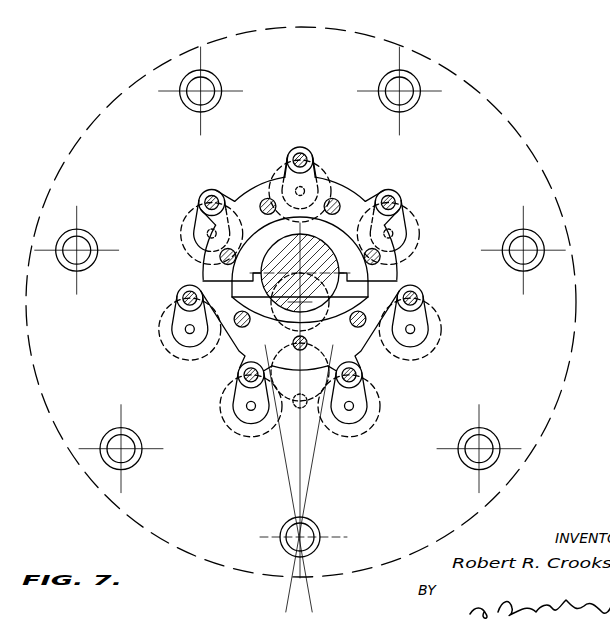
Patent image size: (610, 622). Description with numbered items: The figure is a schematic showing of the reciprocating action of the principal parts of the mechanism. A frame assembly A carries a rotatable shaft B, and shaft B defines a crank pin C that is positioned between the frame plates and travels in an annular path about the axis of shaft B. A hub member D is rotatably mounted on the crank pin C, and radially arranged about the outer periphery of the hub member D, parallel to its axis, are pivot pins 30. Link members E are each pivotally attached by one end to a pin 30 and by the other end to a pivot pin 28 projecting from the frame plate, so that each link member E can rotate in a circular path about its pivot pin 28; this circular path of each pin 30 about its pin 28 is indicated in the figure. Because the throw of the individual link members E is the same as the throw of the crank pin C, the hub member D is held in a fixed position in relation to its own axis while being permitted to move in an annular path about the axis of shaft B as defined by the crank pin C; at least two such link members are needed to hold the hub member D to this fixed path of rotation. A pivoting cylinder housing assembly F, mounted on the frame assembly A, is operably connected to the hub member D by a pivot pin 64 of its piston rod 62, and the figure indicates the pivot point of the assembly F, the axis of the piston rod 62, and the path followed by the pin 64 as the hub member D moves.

The frame assembly A is at (501, 112).
The rotatable shaft B is at (302, 304).
The crank pin C is at (278, 252).
The hub member D is at (345, 198).
The link member E is at (290, 148).
The cylinder housing assembly F is at (280, 537).
The pivot pin 28 is at (186, 328).
The pivot pin 30 is at (303, 158).
The piston rod 62 is at (305, 484).
The pivot pin 64 is at (202, 368).